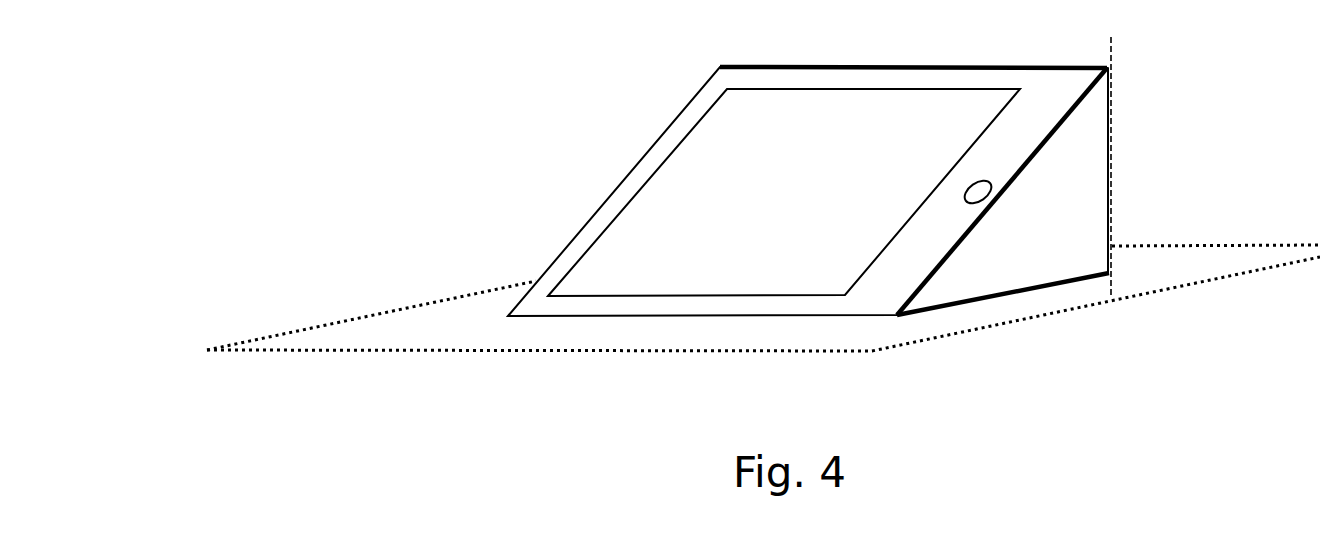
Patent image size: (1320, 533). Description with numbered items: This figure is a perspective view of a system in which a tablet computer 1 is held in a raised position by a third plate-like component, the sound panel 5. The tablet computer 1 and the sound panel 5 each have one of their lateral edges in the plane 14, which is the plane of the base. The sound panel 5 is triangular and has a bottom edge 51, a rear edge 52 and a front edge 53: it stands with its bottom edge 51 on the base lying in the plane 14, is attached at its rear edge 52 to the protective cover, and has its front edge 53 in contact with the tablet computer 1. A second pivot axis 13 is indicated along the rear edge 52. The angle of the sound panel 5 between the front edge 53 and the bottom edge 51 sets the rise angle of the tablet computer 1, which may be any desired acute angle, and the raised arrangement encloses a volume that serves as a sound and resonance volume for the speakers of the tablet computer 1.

The tablet computer 1 is at (704, 178).
The sound panel 5 is at (1050, 203).
The second pivot axis 13 is at (1110, 52).
The plane 14 is at (432, 303).
The bottom edge of sound panel 51 is at (988, 298).
The rear edge of sound panel 52 is at (1112, 222).
The front edge of sound panel 53 is at (1036, 148).